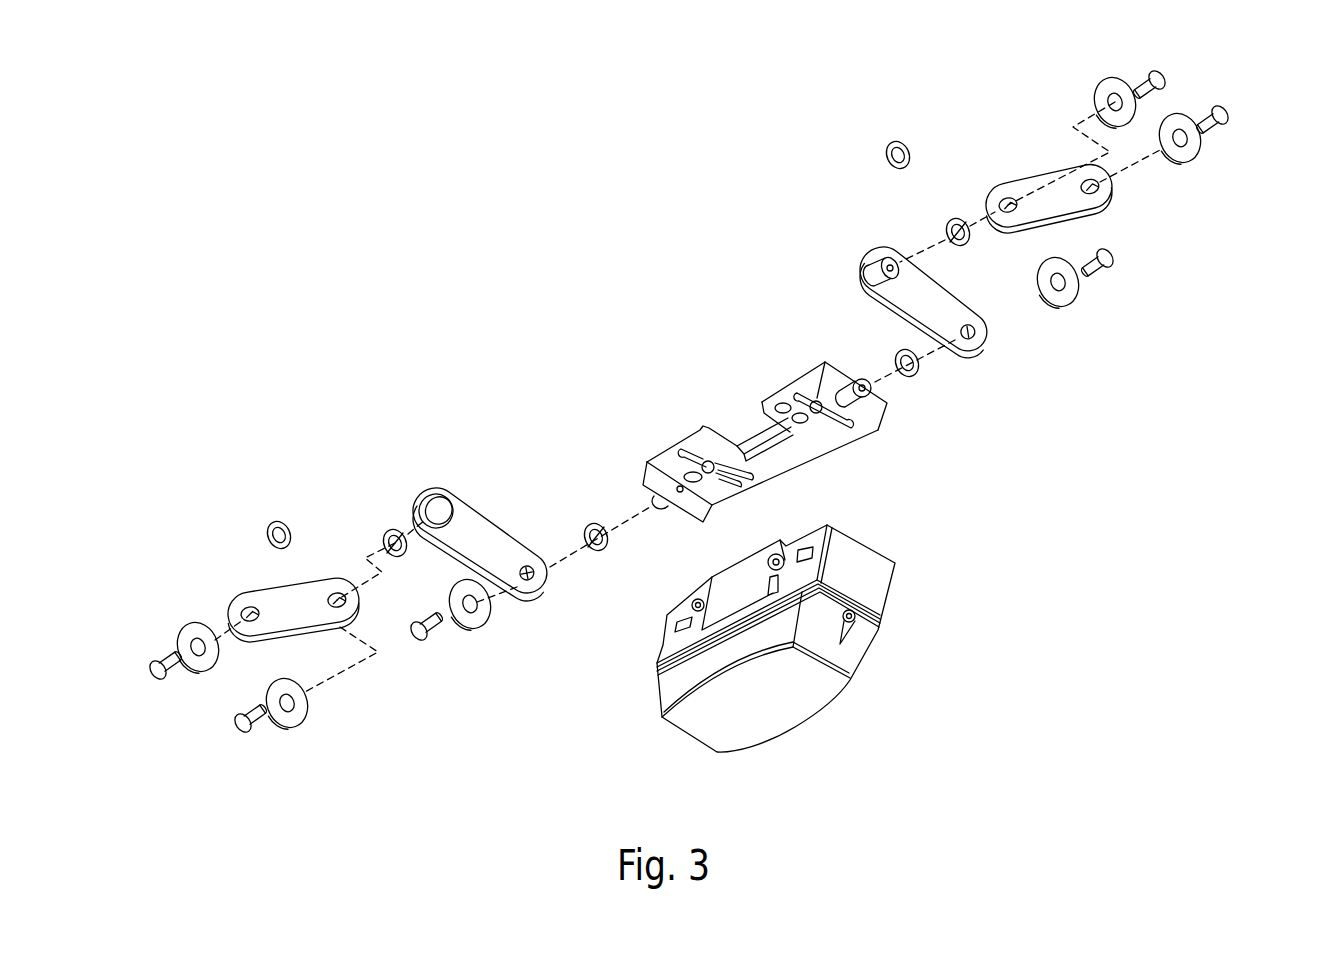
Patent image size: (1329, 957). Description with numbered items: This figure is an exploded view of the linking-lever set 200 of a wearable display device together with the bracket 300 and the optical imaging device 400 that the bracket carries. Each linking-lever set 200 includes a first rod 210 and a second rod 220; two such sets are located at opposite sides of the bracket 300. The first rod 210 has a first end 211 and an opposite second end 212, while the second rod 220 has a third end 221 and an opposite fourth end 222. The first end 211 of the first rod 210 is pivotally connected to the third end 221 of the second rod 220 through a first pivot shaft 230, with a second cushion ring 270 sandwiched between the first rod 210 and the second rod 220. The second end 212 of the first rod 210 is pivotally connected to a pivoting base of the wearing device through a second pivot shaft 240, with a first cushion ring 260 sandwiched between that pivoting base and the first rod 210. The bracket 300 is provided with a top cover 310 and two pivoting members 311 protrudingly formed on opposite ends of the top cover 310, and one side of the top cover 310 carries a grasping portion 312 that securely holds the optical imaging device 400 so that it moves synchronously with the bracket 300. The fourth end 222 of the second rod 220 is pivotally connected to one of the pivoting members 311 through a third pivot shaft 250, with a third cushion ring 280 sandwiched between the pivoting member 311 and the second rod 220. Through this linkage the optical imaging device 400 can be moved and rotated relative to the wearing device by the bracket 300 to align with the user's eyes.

The linking-lever set 200 is at (440, 403).
The first rod 210 is at (250, 576).
The first end 211 is at (1005, 184).
The second end 212 is at (1114, 200).
The second rod 220 is at (398, 500).
The third end 221 is at (857, 289).
The fourth end 222 is at (983, 340).
The first pivot shaft 230 is at (258, 730).
The second pivot shaft 240 is at (158, 660).
The third pivot shaft 250 is at (423, 645).
The first cushion ring 260 is at (294, 538).
The second cushion ring 270 is at (383, 532).
The third cushion ring 280 is at (590, 522).
The bracket 300 is at (1018, 492).
The top cover 310 is at (775, 453).
The pivoting member 311 is at (884, 387).
The grasping portion 312 is at (838, 438).
The optical imaging device 400 is at (797, 702).